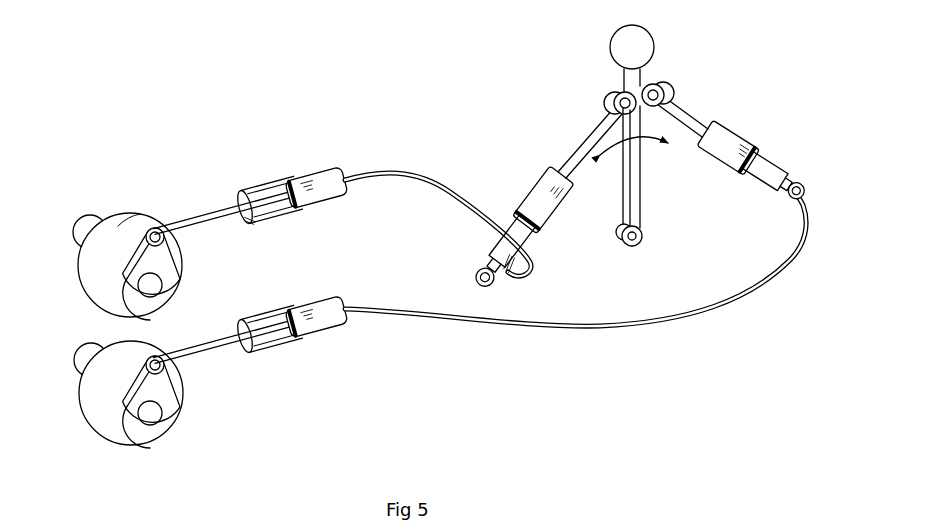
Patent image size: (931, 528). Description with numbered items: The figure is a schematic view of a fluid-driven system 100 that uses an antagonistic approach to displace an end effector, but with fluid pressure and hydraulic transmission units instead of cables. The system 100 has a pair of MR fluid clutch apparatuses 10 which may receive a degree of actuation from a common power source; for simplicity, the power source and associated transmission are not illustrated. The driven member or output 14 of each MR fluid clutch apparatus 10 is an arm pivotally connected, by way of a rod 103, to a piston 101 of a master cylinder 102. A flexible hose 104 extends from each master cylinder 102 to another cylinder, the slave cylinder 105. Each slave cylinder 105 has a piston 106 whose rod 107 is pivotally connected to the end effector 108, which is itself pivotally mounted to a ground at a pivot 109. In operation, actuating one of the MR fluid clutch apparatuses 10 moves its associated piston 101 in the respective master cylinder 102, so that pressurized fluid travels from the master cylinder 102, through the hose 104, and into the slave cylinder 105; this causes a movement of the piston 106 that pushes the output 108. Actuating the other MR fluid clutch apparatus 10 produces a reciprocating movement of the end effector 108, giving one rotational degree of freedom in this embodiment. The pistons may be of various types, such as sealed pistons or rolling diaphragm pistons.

The system 100 is at (270, 88).
The MR fluid clutch apparatus 10 is at (100, 188).
The output 14 is at (151, 228).
The piston 101 is at (288, 177).
The master cylinder 102 is at (280, 212).
The rod 103 is at (238, 200).
The flexible hose 104 is at (398, 178).
The slave cylinder 105 is at (522, 190).
The piston 106 is at (530, 238).
The rod 107 is at (585, 148).
The end effector 108 is at (642, 187).
The pivot 109 is at (640, 246).